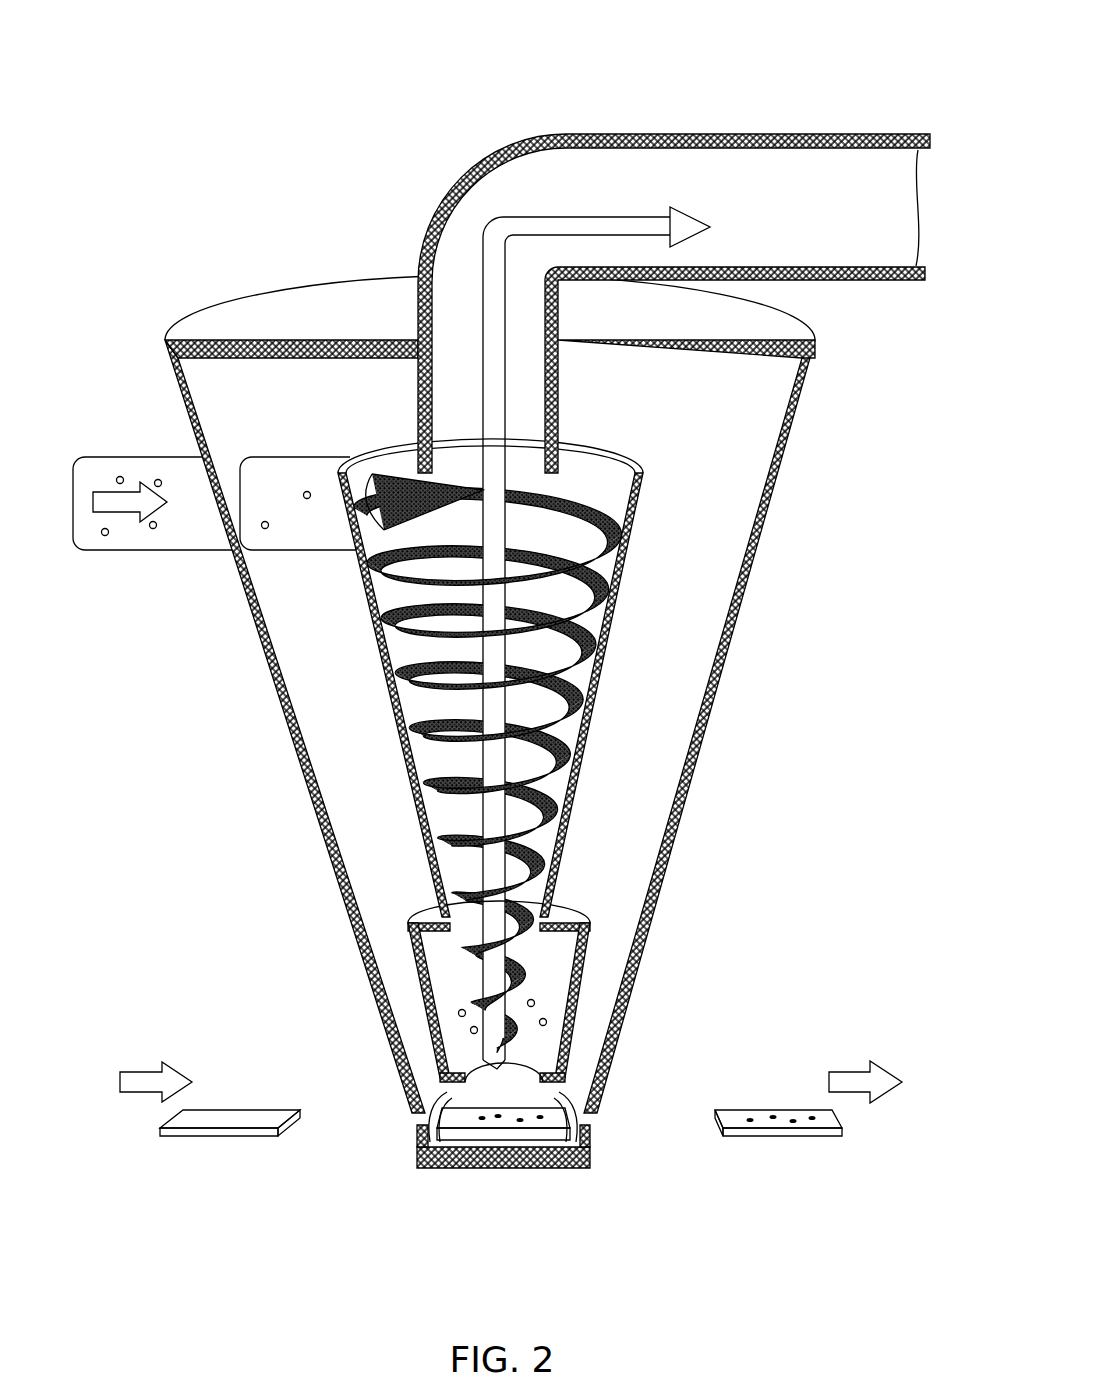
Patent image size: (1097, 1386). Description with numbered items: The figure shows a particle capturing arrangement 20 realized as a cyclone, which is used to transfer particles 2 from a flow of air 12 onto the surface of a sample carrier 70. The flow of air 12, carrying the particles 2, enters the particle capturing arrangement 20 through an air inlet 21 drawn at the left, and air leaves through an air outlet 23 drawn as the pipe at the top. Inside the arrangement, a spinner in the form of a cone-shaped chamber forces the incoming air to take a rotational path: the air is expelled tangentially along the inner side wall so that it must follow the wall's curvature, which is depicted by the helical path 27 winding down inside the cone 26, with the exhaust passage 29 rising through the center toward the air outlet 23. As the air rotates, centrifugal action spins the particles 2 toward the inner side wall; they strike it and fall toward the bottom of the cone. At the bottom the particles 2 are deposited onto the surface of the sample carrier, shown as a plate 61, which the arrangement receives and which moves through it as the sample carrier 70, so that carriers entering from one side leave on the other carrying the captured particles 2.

The particle capturing arrangement 20 is at (501, 618).
The air inlet 21 is at (150, 456).
The air outlet 23 is at (880, 137).
The exhaust tube 29 is at (482, 270).
The separation chamber cone 26 is at (680, 507).
The helical ribbon 27 is at (387, 623).
The flow of air 12 is at (125, 512).
The particles 2 is at (120, 478).
The substrate plate 61 is at (224, 1134).
The sample carrier 70 is at (183, 1151).